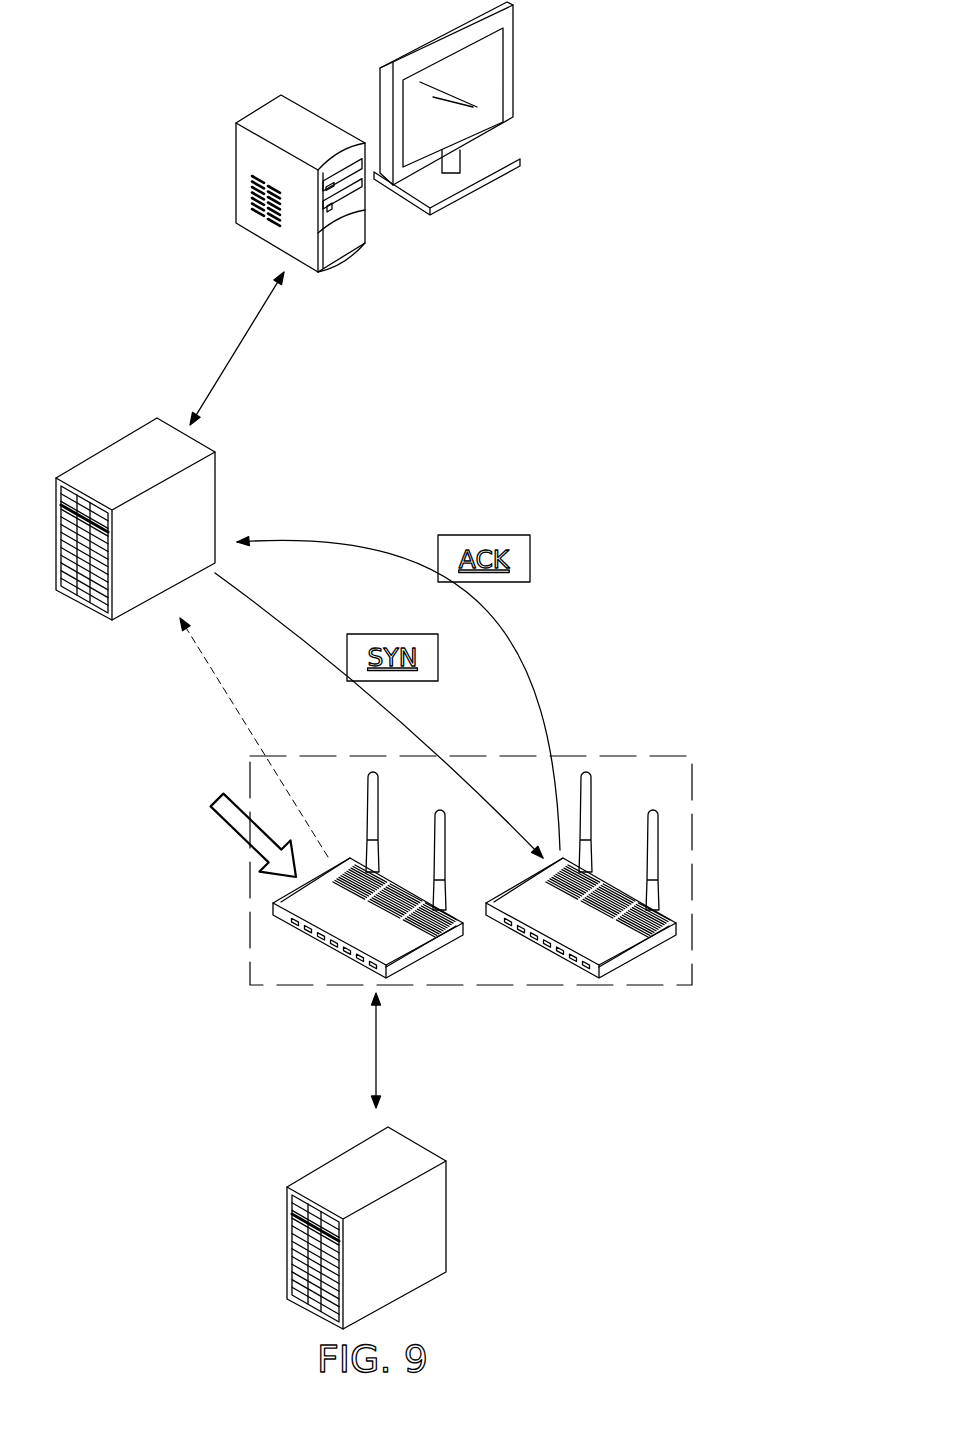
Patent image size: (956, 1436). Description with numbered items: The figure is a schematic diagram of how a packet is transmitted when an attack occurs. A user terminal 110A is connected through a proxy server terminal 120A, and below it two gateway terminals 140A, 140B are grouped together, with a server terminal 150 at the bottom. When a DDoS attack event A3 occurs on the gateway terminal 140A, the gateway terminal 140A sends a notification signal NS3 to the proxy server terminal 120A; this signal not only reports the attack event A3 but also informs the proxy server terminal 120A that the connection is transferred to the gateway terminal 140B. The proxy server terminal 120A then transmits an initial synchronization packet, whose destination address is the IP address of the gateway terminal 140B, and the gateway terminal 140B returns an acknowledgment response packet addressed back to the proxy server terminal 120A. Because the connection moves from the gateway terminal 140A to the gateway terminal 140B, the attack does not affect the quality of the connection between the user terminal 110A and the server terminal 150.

The user terminal 110A is at (236, 150).
The proxy server terminal 120A is at (215, 505).
The notification signal NS3 is at (225, 692).
The DDoS attack event A3 is at (232, 829).
The gateway terminal 140A is at (436, 952).
The gateway terminal 140B is at (648, 952).
The server terminal 150 is at (448, 1213).